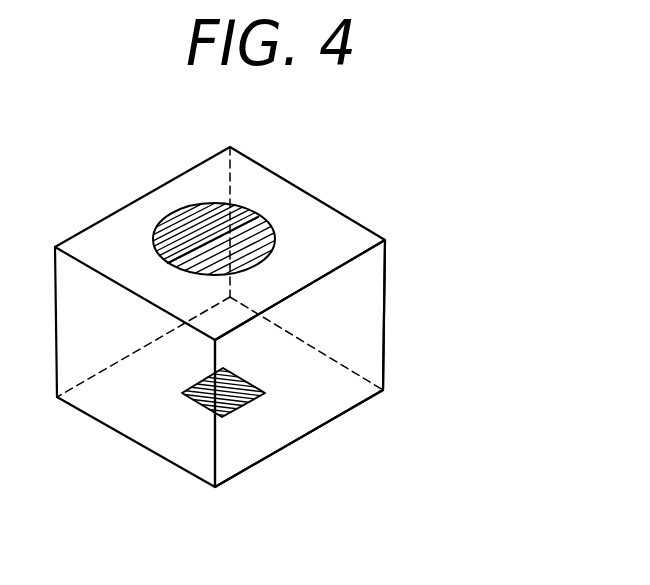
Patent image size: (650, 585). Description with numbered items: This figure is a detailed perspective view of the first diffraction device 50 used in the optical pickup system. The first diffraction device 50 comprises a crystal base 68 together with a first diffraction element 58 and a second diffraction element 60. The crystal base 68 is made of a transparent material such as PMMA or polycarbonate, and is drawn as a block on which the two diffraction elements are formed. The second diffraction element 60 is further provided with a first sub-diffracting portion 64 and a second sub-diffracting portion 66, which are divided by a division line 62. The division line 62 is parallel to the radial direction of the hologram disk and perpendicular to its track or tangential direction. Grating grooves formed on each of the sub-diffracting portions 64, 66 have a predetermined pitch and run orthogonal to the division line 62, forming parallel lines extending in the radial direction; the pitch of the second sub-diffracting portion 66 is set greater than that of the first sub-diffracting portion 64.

The first diffraction device 50 is at (567, 110).
The first diffraction element 58 is at (243, 418).
The second diffraction element 60 is at (283, 243).
The division line 62 is at (253, 215).
The first sub-diffracting portion 64 is at (168, 221).
The second sub-diffracting portion 66 is at (210, 274).
The crystal base 68 is at (358, 273).